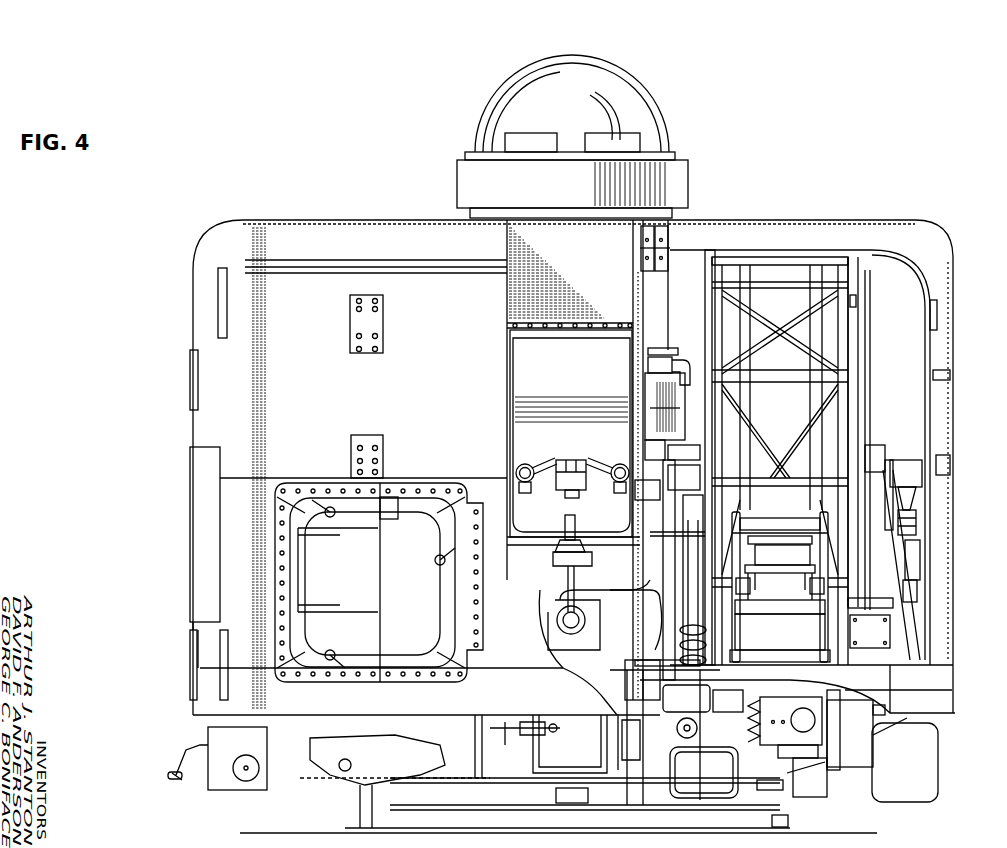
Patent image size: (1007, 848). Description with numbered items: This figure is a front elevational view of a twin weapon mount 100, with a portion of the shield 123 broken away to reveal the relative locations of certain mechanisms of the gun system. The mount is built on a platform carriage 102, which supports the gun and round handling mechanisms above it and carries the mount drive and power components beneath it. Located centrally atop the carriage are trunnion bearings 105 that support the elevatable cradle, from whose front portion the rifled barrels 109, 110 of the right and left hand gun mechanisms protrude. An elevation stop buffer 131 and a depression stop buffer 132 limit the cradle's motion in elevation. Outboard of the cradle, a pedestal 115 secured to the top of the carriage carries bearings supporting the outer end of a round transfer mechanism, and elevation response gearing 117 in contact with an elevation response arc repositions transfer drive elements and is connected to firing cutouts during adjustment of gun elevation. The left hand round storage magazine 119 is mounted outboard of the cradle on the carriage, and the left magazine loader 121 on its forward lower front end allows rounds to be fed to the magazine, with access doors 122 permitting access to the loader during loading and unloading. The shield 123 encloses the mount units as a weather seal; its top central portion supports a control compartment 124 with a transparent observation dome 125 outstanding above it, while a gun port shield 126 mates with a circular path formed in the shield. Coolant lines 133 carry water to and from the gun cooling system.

The twin weapon mount 100 is at (931, 207).
The platform carriage 102 is at (940, 703).
The trunnion bearings 105 is at (662, 483).
The rifled barrel 109 is at (540, 452).
The rifled barrel 110 is at (619, 463).
The pedestal 115 is at (903, 612).
The elevation response gearing 117 is at (883, 572).
The left hand round storage magazine 119 is at (842, 348).
The left magazine loader 121 is at (780, 587).
The access doors 122 is at (379, 582).
The shield 123 is at (955, 276).
The control compartment 124 is at (690, 178).
The transparent observation dome 125 is at (657, 108).
The gun port shield 126 is at (573, 437).
The elevation stop buffer 131 is at (554, 623).
The depression stop buffer 132 is at (556, 560).
The coolant lines 133 is at (598, 463).